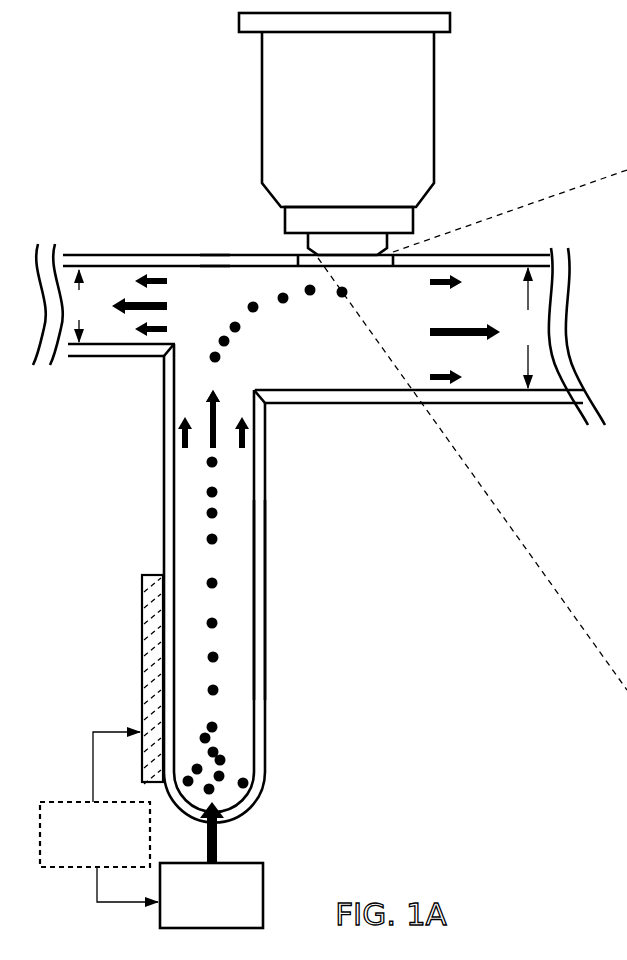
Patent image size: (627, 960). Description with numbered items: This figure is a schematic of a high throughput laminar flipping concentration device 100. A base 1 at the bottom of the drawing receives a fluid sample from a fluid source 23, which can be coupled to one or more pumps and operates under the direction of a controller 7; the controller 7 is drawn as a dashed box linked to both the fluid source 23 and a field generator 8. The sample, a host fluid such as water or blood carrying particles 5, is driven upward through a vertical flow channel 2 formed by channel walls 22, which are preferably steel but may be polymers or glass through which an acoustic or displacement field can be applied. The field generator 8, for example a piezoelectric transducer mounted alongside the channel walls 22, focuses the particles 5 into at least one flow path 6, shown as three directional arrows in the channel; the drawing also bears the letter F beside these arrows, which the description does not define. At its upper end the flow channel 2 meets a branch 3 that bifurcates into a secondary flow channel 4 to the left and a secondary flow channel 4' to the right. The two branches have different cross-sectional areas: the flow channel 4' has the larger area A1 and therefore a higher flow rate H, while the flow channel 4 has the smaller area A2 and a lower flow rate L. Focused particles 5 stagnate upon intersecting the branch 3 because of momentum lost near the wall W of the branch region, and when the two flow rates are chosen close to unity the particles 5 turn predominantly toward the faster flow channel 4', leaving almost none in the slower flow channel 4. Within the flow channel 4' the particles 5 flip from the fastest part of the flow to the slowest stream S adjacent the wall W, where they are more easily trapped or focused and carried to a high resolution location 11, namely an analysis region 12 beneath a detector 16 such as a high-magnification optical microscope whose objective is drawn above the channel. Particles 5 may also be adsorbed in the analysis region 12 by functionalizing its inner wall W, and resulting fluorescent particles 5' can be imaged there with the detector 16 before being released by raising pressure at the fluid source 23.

The device 100 is at (116, 118).
The secondary flow channel 4 is at (291, 254).
The secondary flow channel 4' is at (430, 376).
The analysis region 12 is at (303, 254).
The wall W is at (204, 262).
The detector 16 is at (344, 134).
The high resolution location 11 is at (354, 272).
The flow rate L is at (152, 305).
The slowest flow stream S is at (455, 327).
The flow rate H is at (451, 333).
The cross-sectional area A1 is at (528, 328).
The cross-sectional area A2 is at (79, 306).
The flow channel 2 is at (230, 512).
The channel walls 22 is at (265, 586).
The base 1 is at (243, 810).
The branch 3 is at (248, 394).
The flow path 6 is at (187, 442).
The gas flow direction F is at (213, 408).
The particles 5 is at (337, 626).
The fluorescent particles 5' is at (305, 391).
The field generator 8 is at (142, 682).
The controller 7 is at (99, 817).
The fluid source 23 is at (211, 865).